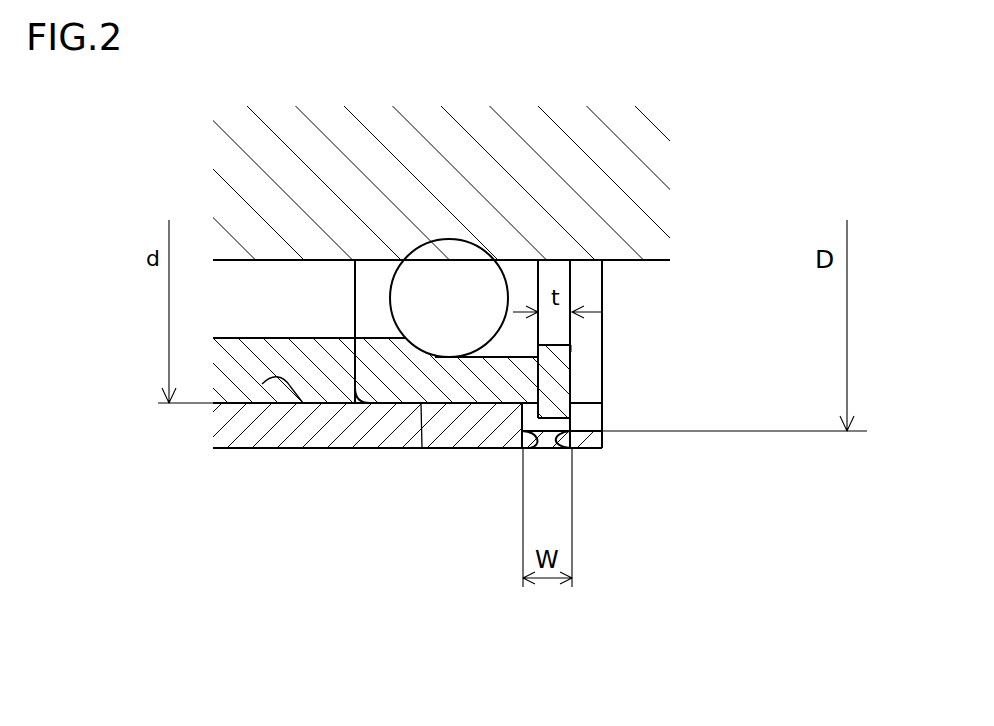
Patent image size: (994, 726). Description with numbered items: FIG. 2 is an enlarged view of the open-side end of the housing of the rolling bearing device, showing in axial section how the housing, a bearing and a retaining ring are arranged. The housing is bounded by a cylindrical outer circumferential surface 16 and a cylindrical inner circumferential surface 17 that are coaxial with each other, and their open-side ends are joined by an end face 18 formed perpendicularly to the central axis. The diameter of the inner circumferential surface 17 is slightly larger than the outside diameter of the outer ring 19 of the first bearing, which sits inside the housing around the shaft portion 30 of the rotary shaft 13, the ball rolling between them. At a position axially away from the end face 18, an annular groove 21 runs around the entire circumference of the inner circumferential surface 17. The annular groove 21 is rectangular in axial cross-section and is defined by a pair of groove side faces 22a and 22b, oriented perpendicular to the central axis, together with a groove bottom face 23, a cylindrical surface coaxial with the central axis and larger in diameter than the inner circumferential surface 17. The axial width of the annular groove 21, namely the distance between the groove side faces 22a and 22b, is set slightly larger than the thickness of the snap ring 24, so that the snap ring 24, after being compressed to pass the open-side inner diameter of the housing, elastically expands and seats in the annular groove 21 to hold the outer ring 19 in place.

The rotary shaft 13 is at (448, 185).
The shaft portion 30 is at (470, 198).
The outer circumferential surface 16 is at (318, 448).
The inner circumferential surface 17 is at (262, 384).
The end face 18 is at (602, 418).
The outer ring 19 is at (422, 448).
The annular groove 21 is at (610, 401).
The groove side face 22a is at (565, 449).
The groove side face 22b is at (562, 400).
The groove bottom face 23 is at (596, 372).
The snap ring 24 is at (571, 345).